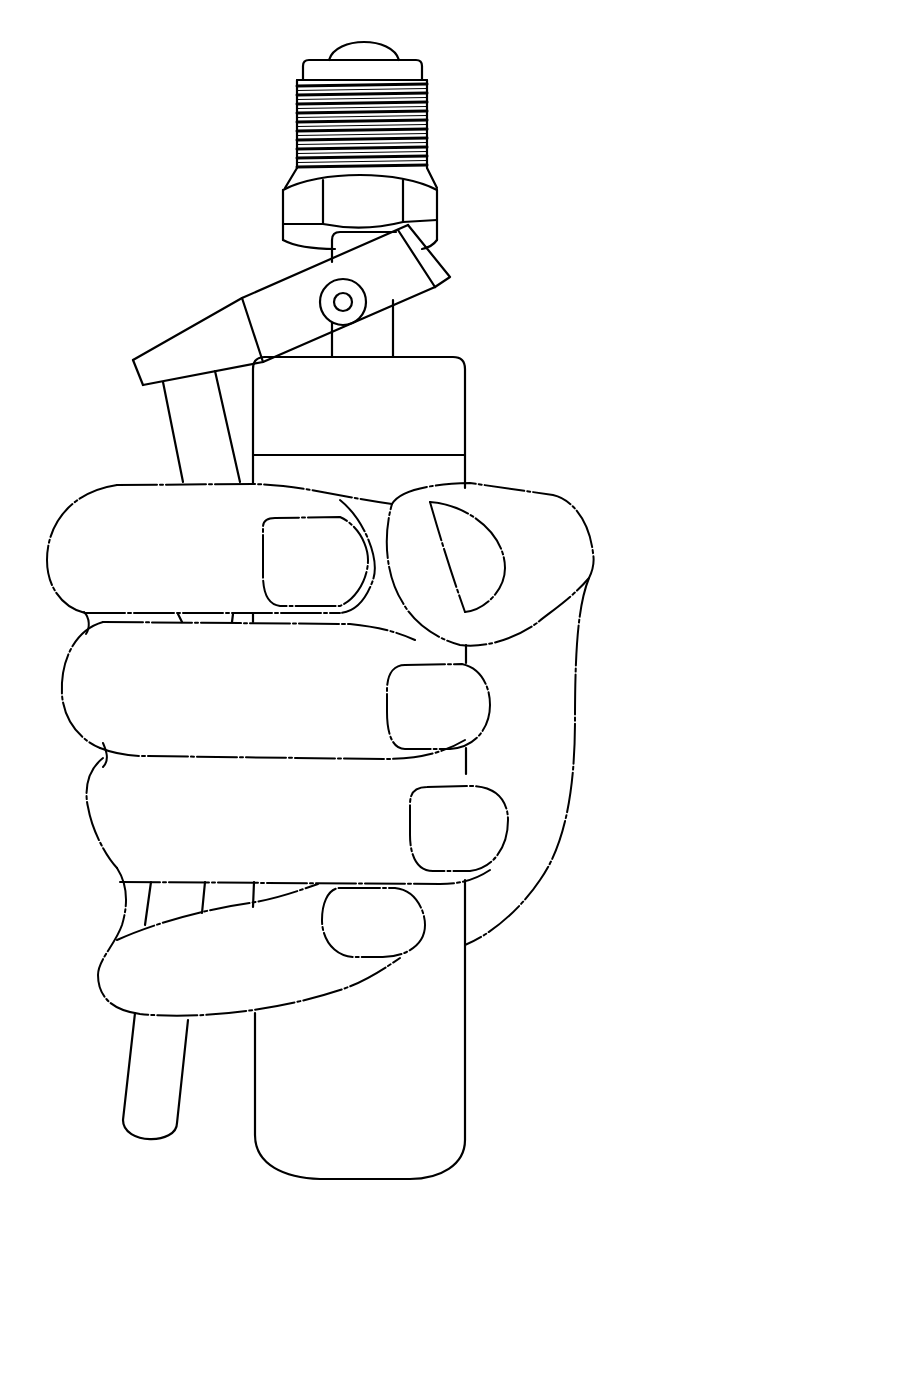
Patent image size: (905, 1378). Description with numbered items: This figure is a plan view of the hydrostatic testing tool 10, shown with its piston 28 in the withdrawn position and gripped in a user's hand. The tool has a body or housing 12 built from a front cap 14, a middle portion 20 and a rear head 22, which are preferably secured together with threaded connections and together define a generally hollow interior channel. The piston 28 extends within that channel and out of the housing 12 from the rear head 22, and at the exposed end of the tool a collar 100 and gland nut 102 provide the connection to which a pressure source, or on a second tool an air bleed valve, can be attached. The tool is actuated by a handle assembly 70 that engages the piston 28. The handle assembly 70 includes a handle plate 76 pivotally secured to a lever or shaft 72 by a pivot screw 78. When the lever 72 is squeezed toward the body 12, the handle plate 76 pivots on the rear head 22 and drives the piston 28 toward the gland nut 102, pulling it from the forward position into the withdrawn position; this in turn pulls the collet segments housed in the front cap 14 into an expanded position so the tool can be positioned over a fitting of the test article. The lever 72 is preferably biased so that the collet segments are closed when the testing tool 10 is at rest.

The hydrostatic testing tool 10 is at (246, 288).
The body or housing 12 is at (482, 1050).
The front cap 14 is at (465, 1103).
The middle portion 20 is at (467, 473).
The rear head 22 is at (467, 410).
The piston 28 is at (393, 336).
The handle assembly 70 is at (138, 346).
The lever or shaft 72 is at (172, 435).
The handle plate 76 is at (440, 253).
The pivot screw 78 is at (365, 304).
The collar 100 is at (427, 103).
The gland nut 102 is at (437, 193).